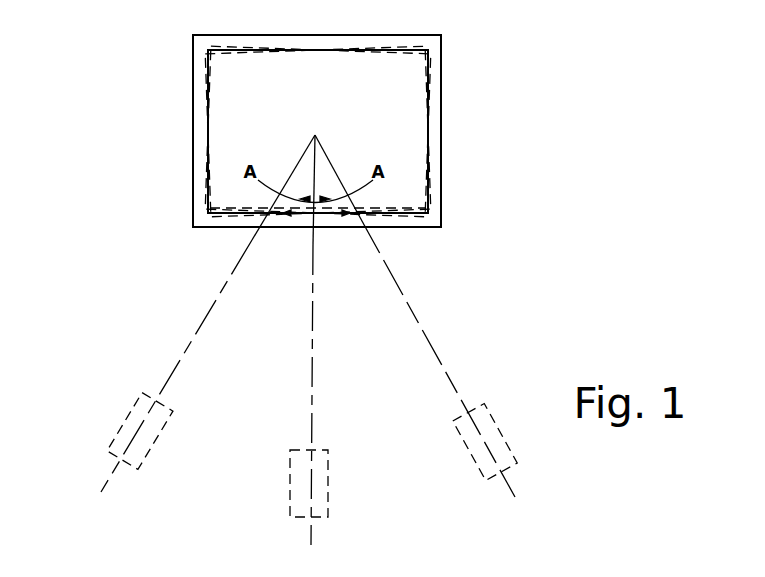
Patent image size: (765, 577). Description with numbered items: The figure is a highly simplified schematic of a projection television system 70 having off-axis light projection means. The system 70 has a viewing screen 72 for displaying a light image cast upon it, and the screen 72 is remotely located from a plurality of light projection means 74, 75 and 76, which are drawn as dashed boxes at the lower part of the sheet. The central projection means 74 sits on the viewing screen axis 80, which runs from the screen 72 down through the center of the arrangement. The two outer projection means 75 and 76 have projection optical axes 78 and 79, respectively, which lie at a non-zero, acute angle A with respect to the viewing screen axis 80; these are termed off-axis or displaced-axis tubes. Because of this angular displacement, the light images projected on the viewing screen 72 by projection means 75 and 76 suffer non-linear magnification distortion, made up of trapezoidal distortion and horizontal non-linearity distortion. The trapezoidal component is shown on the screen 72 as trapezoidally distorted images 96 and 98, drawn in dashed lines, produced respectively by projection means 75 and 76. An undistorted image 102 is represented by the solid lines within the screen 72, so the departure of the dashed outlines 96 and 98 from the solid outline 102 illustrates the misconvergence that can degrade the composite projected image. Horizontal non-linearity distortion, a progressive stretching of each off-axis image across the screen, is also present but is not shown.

The projection television system 70 is at (82, 97).
The viewing screen 72 is at (193, 110).
The light projection means 74 is at (330, 490).
The light projection means 75 is at (480, 473).
The light projection means 76 is at (148, 457).
The projection optical axis 78 is at (432, 337).
The projection optical axis 79 is at (180, 367).
The viewing screen axis 80 is at (313, 318).
The trapezoidally distorted image 96 is at (423, 220).
The trapezoidally distorted image 98 is at (230, 47).
The undistorted image 102 is at (217, 47).